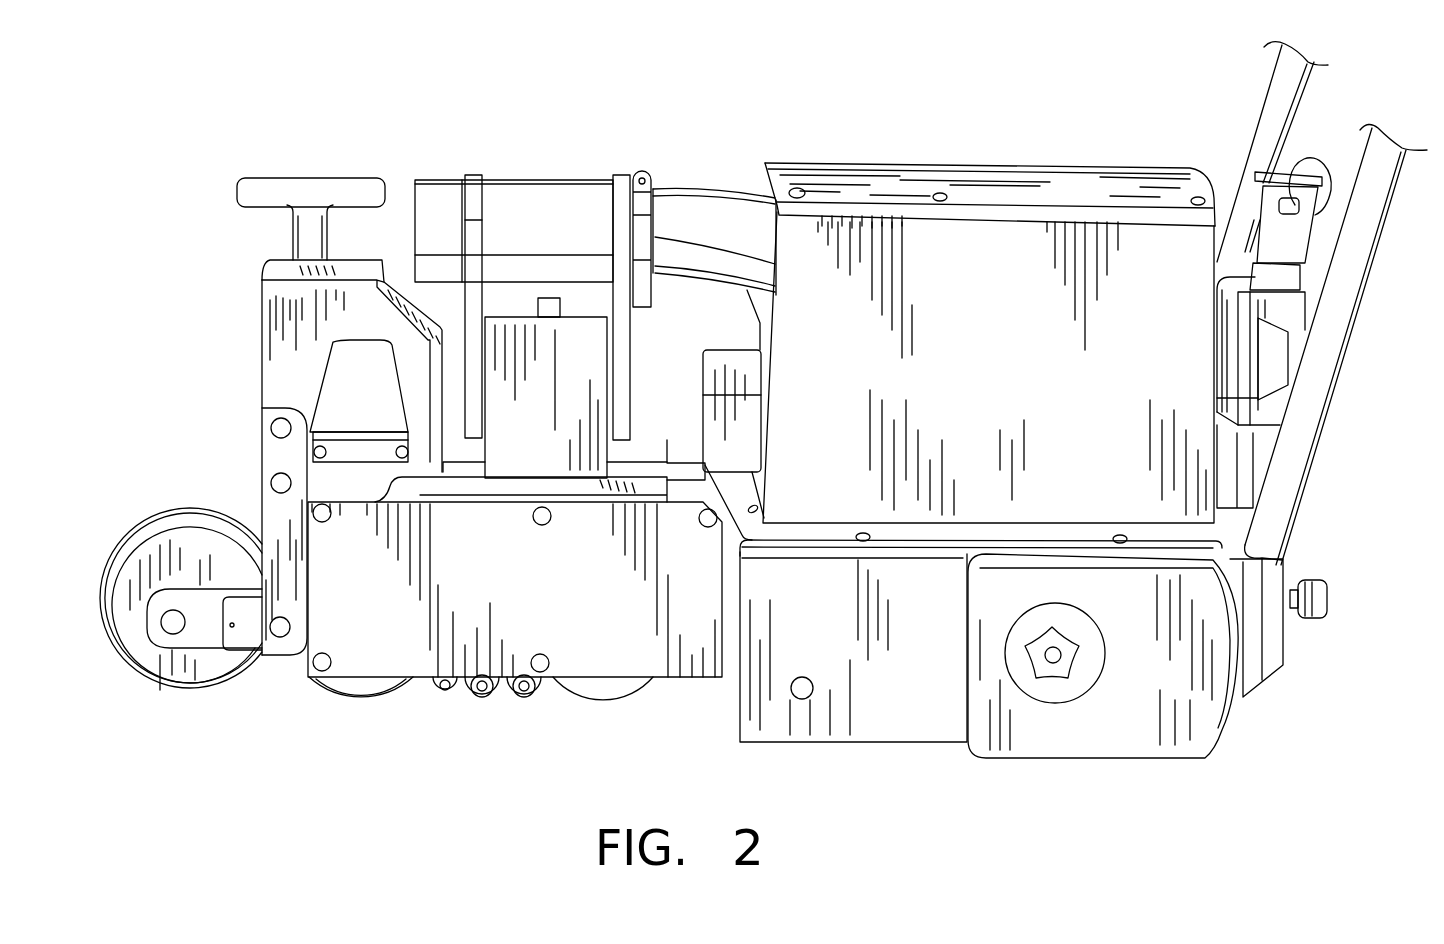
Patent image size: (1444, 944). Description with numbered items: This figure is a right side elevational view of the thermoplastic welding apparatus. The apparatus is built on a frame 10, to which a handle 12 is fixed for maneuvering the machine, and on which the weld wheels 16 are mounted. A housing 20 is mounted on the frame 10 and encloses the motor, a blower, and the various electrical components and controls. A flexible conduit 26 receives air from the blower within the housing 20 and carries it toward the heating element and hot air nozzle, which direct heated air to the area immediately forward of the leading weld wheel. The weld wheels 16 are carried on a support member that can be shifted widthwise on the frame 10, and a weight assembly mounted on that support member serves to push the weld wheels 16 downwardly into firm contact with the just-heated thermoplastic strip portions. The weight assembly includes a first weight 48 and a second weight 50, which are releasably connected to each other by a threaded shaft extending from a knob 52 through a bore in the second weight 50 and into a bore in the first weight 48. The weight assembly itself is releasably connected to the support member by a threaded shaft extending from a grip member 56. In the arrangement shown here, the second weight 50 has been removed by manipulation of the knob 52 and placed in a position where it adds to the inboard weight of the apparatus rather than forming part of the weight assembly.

The frame 10 is at (1260, 574).
The handle 12 is at (1368, 250).
The weld wheels 16 is at (177, 515).
The housing 20 is at (1012, 388).
The flexible conduit 26 is at (697, 218).
The first weight 48 is at (288, 302).
The second weight 50 is at (1175, 712).
The knob 52 is at (1068, 673).
The grip member 56 is at (310, 178).